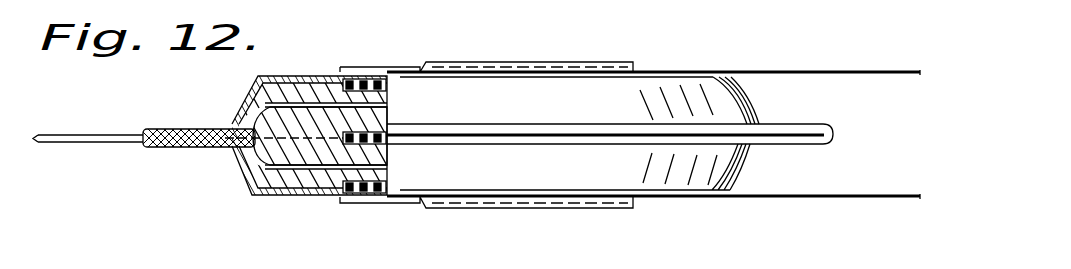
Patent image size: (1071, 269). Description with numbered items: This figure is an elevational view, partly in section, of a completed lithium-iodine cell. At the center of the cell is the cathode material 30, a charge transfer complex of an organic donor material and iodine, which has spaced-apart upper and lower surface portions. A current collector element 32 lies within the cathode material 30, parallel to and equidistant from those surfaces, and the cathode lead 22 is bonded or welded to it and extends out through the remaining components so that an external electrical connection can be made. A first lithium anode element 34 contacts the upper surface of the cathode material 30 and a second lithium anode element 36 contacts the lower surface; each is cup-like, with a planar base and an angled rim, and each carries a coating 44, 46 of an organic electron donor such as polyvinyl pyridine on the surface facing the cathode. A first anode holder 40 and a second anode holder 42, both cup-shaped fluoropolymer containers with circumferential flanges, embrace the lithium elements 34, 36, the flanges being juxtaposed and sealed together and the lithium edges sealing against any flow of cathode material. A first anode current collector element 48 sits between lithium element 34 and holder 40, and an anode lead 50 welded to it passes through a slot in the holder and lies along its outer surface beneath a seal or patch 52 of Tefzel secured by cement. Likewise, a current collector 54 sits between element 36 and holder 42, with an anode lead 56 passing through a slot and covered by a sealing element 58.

The cathode lead 22 is at (53, 144).
The cathode material 30 is at (262, 152).
The current collector element 32 is at (387, 155).
The first lithium anode element 34 is at (298, 90).
The second lithium anode element 36 is at (272, 199).
The first anode holder 40 is at (313, 74).
The second anode holder 42 is at (310, 197).
The coating 44 is at (262, 97).
The coating 46 is at (327, 197).
The first anode current collector element 48 is at (388, 90).
The anode lead 50 is at (868, 68).
The seal or patch 52 is at (463, 62).
The current collector 54 is at (358, 193).
The anode lead 56 is at (808, 199).
The sealing element 58 is at (380, 205).